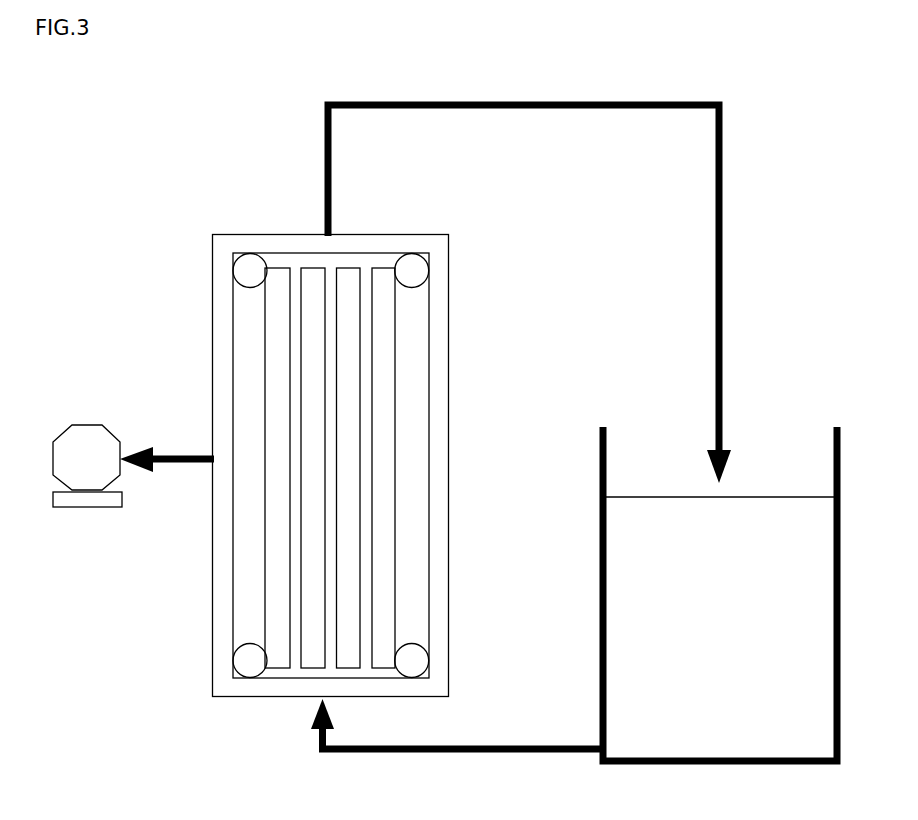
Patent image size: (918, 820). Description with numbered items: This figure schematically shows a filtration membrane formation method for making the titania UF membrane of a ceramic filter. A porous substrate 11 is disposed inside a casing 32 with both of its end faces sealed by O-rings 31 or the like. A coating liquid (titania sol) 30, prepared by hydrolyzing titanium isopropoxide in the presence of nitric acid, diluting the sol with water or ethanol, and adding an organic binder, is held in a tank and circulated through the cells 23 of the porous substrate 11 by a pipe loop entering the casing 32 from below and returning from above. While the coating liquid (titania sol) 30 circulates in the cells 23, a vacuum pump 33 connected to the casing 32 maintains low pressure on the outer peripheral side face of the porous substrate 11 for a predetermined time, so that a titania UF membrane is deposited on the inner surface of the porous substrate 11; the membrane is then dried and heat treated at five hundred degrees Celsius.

The porous substrate 11 is at (282, 320).
The cells 23 is at (367, 315).
The coating liquid (titania sol) 30 is at (625, 537).
The O-rings 31 is at (250, 663).
The casing 32 is at (440, 358).
The vacuum pump 33 is at (75, 437).